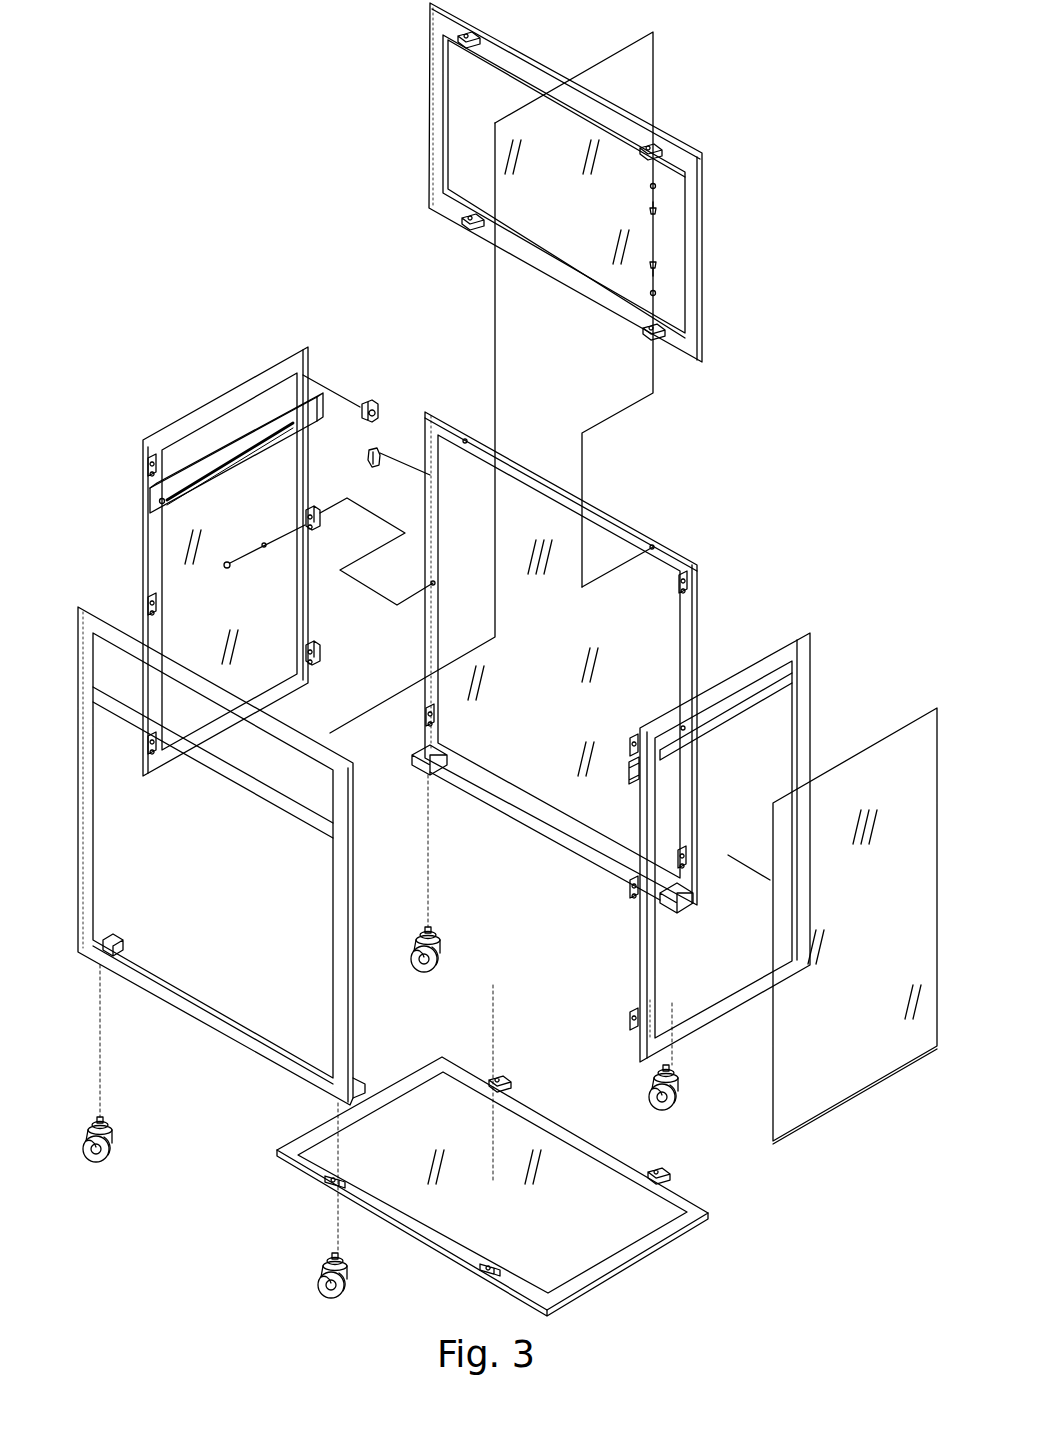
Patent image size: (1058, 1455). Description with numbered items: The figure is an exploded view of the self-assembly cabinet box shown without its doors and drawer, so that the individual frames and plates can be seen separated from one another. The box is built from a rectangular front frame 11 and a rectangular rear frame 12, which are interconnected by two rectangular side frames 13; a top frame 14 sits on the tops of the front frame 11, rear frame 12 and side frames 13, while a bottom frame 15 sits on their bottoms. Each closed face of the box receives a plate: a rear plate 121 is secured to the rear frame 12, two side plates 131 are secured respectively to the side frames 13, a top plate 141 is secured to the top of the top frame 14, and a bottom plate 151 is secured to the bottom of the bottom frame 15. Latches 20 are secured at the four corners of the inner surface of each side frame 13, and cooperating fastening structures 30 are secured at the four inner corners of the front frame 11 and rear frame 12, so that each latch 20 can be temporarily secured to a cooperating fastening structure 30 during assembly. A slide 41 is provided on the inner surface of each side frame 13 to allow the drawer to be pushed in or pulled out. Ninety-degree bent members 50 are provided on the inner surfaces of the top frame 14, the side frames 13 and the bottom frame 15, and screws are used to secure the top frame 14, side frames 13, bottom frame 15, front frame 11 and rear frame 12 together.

The front frame 11 is at (237, 1033).
The rear frame 12 is at (620, 530).
The side frame 13 is at (180, 418).
The top frame 14 is at (435, 106).
The bottom frame 15 is at (650, 1240).
The latch 20 is at (363, 400).
The cooperating fastening structure 30 is at (383, 447).
The slide 41 is at (240, 440).
The 90-degree bent member 50 is at (464, 36).
The rear plate 121 is at (537, 510).
The side plate 131 is at (905, 752).
The top plate 141 is at (465, 163).
The bottom plate 151 is at (540, 1250).